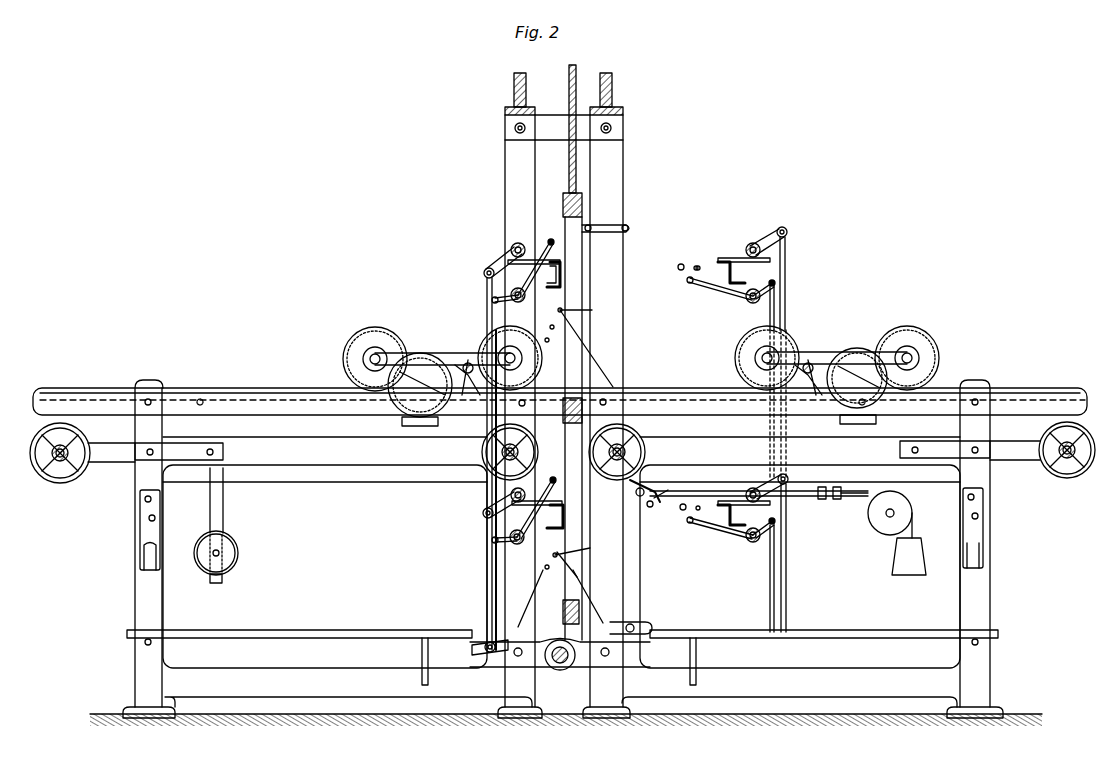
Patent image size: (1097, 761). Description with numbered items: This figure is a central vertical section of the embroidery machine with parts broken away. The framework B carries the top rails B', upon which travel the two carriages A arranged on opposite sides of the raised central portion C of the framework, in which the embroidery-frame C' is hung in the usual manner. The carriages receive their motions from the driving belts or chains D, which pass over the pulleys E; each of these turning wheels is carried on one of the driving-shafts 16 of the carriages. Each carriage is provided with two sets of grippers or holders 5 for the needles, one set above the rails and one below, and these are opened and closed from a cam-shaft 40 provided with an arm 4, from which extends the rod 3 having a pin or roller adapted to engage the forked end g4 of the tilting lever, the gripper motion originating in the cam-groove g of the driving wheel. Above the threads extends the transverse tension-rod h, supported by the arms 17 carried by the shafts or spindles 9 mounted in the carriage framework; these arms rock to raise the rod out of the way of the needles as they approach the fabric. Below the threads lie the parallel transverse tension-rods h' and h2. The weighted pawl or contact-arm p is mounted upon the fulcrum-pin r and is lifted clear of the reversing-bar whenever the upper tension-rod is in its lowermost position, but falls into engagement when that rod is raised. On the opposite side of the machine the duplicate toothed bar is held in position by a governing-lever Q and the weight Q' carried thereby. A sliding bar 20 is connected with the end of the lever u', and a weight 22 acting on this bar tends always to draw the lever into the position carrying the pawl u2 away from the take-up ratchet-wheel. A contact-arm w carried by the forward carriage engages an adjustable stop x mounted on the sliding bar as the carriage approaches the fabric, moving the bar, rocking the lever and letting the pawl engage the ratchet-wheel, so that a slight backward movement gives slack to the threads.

The framework B is at (557, 549).
The raised central portion of the framework C is at (561, 395).
The embroidery-frame C' is at (605, 352).
The top rails B' is at (560, 387).
The pulleys E is at (52, 480).
The driving-shafts of the carriages 16 is at (589, 452).
The driving belts or chains D is at (561, 552).
The governing-lever Q is at (229, 500).
The weight Q' is at (229, 557).
The carriages A is at (641, 357).
The fulcrum-pin r is at (470, 362).
The pawl or contact-arm p is at (637, 387).
The arm 4 is at (495, 258).
The cam-shaft 40 is at (480, 230).
The grippers or holders 5 is at (597, 500).
The arms 17 is at (714, 542).
The shafts or spindles 9 is at (641, 402).
The rod 3 is at (486, 302).
The transverse tension-rod h is at (615, 385).
The transverse tension-rod h' is at (608, 440).
The transverse tension-rod h2 is at (700, 505).
The cam-groove g is at (570, 668).
The forked ends of the oscillating lever g4 is at (490, 655).
The sliding bar 20 is at (683, 491).
The pawl u2 is at (629, 504).
The lever u' is at (649, 507).
The adjustable stop x is at (822, 500).
The contact-arm w is at (848, 500).
The weight 22 is at (922, 546).